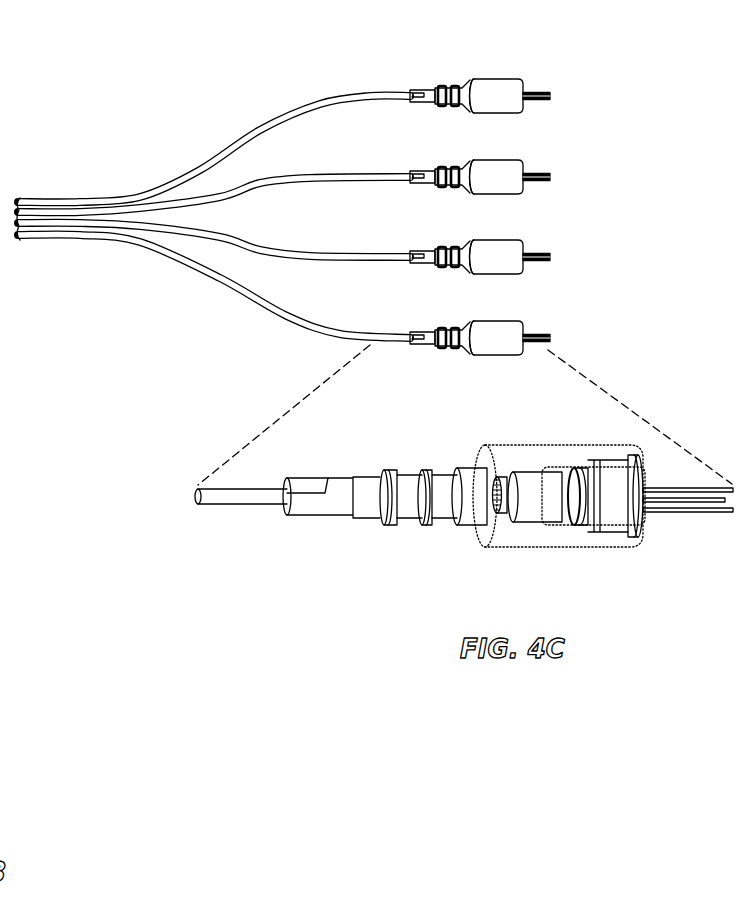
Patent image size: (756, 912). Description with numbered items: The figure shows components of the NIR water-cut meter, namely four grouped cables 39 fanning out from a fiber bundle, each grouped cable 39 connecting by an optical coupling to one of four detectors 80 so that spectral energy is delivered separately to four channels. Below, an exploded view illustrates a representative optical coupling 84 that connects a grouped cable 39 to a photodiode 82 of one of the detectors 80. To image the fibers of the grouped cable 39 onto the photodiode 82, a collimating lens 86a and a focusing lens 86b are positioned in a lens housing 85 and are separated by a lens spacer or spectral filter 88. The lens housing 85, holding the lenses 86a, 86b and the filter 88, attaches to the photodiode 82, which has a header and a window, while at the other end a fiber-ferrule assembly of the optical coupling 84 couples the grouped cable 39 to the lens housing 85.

The grouped cable 39 is at (153, 224).
The detector 80 is at (495, 64).
The photodiode 82 is at (644, 537).
The optical coupling 84 is at (430, 525).
The lens housing 85 is at (545, 446).
The collimating lens 86a is at (497, 520).
The focusing lens 86b is at (591, 523).
The lens spacer or spectral filter 88 is at (535, 523).